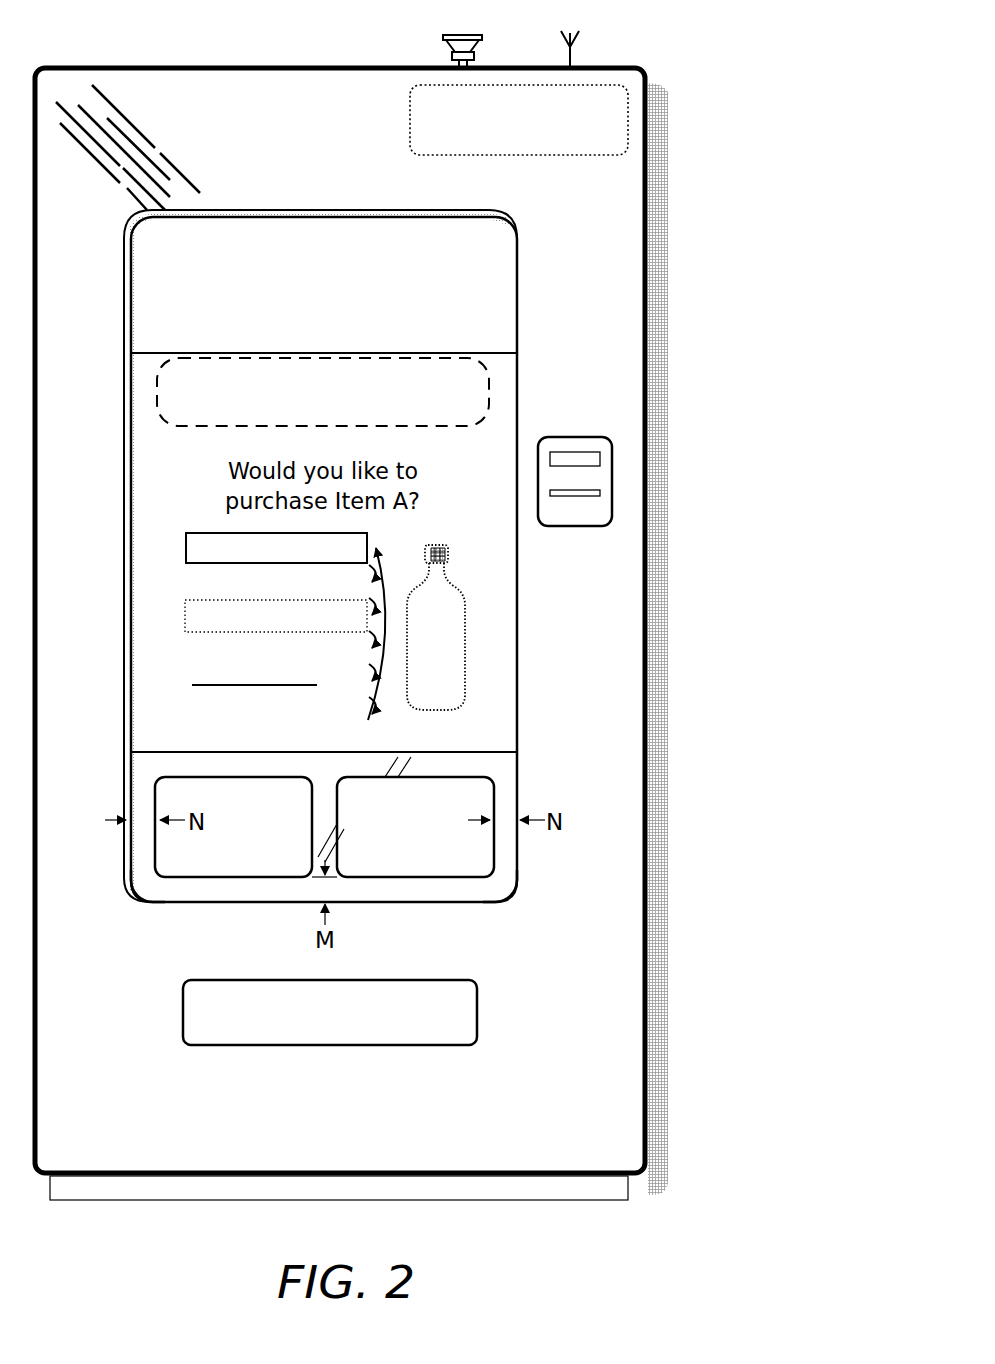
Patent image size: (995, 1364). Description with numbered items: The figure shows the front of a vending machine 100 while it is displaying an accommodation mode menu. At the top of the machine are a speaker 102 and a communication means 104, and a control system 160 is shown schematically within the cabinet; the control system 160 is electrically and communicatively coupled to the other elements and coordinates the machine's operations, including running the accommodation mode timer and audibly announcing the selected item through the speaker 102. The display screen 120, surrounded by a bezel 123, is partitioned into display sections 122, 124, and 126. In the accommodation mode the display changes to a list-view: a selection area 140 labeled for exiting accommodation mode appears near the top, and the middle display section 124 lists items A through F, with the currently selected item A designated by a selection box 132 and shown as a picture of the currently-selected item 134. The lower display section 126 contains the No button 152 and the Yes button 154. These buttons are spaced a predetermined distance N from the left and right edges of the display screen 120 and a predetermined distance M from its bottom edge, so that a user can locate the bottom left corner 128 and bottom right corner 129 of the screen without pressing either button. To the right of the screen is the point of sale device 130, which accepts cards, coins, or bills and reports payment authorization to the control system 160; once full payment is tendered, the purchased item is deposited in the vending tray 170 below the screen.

The vending machine 100 is at (618, 67).
The speaker 102 is at (443, 48).
The communication means 104 is at (563, 50).
The display screen 120 is at (421, 226).
The display section 122 is at (143, 337).
The bezel 123 is at (128, 466).
The display section 124 is at (145, 640).
The display section 126 is at (144, 763).
The bottom left corner 128 is at (131, 897).
The bottom right corner 129 is at (505, 900).
The point of sale device 130 is at (555, 437).
The selection box 132 is at (228, 532).
The picture of the currently-selected item 134 is at (437, 545).
The selection area 140 is at (413, 357).
The No button 152 is at (253, 856).
The Yes button 154 is at (433, 856).
The control system 160 is at (540, 147).
The vending tray 170 is at (462, 980).